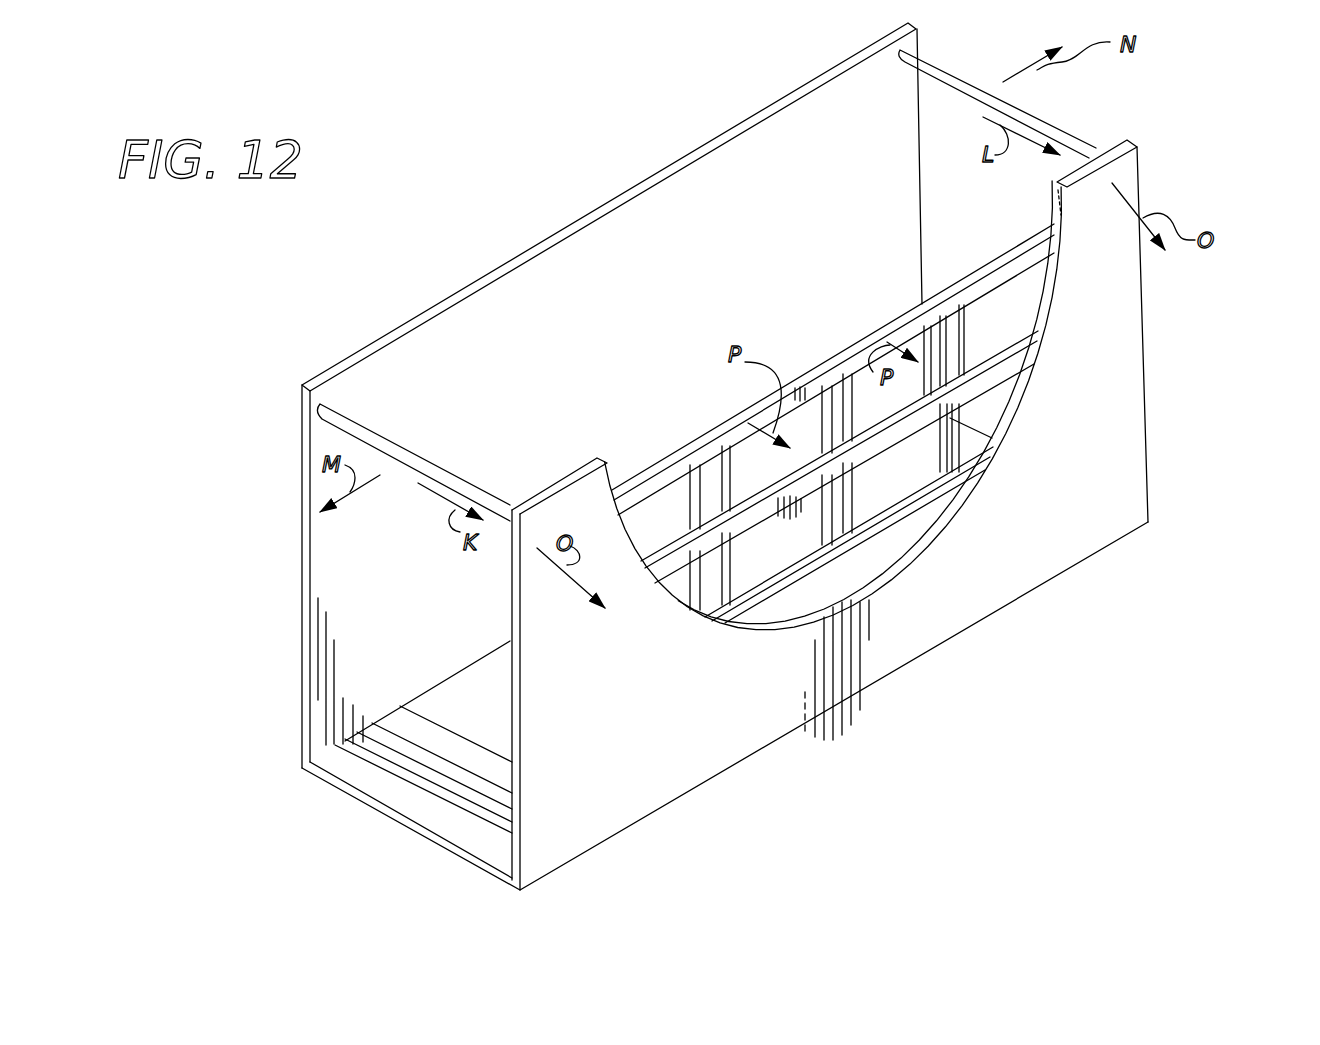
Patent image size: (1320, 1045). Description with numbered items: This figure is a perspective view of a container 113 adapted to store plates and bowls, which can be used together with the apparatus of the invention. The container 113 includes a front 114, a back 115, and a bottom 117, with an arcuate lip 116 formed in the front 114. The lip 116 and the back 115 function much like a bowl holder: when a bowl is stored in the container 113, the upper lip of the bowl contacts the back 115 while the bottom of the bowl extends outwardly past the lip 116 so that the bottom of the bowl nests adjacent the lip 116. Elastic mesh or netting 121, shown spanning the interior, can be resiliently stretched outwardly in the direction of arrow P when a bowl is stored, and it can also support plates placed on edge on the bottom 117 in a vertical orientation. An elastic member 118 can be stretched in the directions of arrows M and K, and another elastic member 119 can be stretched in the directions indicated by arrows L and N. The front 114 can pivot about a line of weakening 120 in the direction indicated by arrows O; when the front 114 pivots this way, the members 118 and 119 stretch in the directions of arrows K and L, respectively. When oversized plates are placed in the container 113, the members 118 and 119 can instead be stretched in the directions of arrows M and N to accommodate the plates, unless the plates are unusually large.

The container 113 is at (1197, 394).
The front 114 is at (1135, 507).
The back 115 is at (781, 102).
The arcuate lip 116 is at (1023, 383).
The bottom 117 is at (450, 700).
The elastic member 118 is at (440, 465).
The elastic member 119 is at (938, 70).
The line of weakening 120 is at (768, 758).
The elastic mesh or netting 121 is at (903, 306).